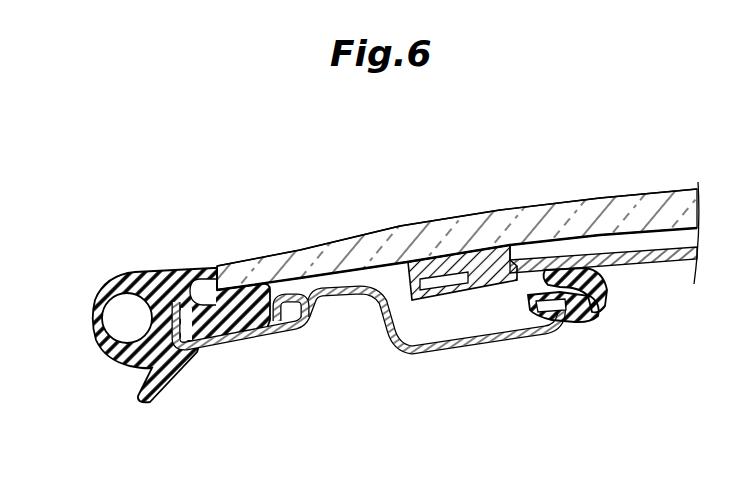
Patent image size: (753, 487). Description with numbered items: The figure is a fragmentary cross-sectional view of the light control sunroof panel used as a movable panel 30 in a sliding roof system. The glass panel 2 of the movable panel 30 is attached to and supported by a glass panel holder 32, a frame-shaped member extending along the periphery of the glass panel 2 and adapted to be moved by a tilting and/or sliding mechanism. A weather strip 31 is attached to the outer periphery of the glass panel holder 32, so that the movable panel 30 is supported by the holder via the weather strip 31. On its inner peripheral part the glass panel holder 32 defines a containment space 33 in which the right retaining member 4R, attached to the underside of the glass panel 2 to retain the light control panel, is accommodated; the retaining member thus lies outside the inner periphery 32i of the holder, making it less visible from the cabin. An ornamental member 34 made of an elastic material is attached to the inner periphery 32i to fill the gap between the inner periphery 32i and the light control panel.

The movable panel 30 is at (286, 172).
The glass panel 2 is at (607, 200).
The weather strip 31 is at (140, 267).
The glass panel holder 32 is at (291, 331).
The inner periphery of the glass panel holder 32i is at (606, 300).
The containment space 33 is at (471, 315).
The ornamental member 34 is at (607, 285).
The right retaining member 4R is at (423, 300).